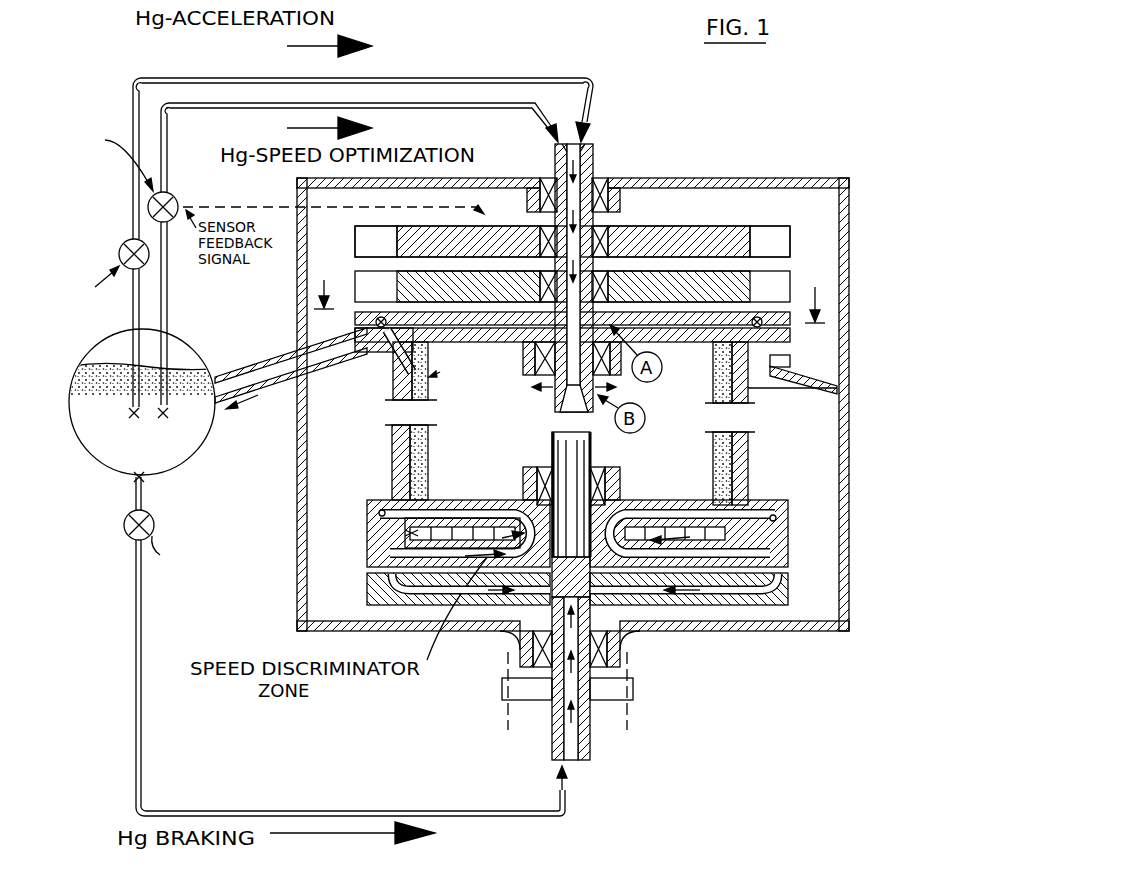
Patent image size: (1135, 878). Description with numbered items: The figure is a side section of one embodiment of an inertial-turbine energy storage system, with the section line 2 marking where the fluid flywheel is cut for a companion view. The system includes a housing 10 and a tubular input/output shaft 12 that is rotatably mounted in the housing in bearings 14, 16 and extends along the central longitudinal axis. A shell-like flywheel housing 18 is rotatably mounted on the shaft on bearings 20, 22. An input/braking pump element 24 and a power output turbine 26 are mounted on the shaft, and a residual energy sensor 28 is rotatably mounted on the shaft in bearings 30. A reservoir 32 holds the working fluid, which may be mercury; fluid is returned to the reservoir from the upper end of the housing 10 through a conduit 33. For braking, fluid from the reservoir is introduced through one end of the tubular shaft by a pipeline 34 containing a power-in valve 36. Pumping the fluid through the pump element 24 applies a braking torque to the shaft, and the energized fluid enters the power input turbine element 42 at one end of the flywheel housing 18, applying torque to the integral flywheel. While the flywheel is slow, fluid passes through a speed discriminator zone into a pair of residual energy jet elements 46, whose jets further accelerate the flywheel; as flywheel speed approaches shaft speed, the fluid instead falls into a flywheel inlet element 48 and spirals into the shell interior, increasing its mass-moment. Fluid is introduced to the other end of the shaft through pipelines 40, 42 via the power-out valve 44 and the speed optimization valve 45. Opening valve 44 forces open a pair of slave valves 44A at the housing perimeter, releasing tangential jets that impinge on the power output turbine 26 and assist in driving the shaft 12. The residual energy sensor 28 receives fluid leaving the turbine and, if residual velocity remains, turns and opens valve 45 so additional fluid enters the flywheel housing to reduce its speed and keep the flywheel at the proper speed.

The housing 10 is at (725, 178).
The tubular input/output shaft 12 is at (595, 150).
The bearing 14 is at (612, 645).
The bearing 16 is at (600, 178).
The flywheel housing 18 is at (393, 397).
The bearing 20 is at (595, 470).
The bearing 22 is at (527, 356).
The input/braking pump element 24 is at (480, 580).
The power output turbine 26 is at (800, 296).
The residual energy sensor 28 is at (695, 240).
The bearing 30 is at (624, 228).
The reservoir 32 is at (92, 458).
The conduit 33 is at (270, 360).
The pipeline 34 is at (137, 770).
The power-in valve 36 is at (124, 528).
The pipeline 40 is at (174, 80).
The power input turbine element 42 is at (790, 562).
The power-out valve 44 is at (133, 242).
The slave valve 44A is at (863, 357).
The speed optimization valve 45 is at (178, 198).
The residual energy jet element 46 is at (800, 528).
The flywheel inlet element 48 is at (660, 560).
The section line 2 is at (569, 289).